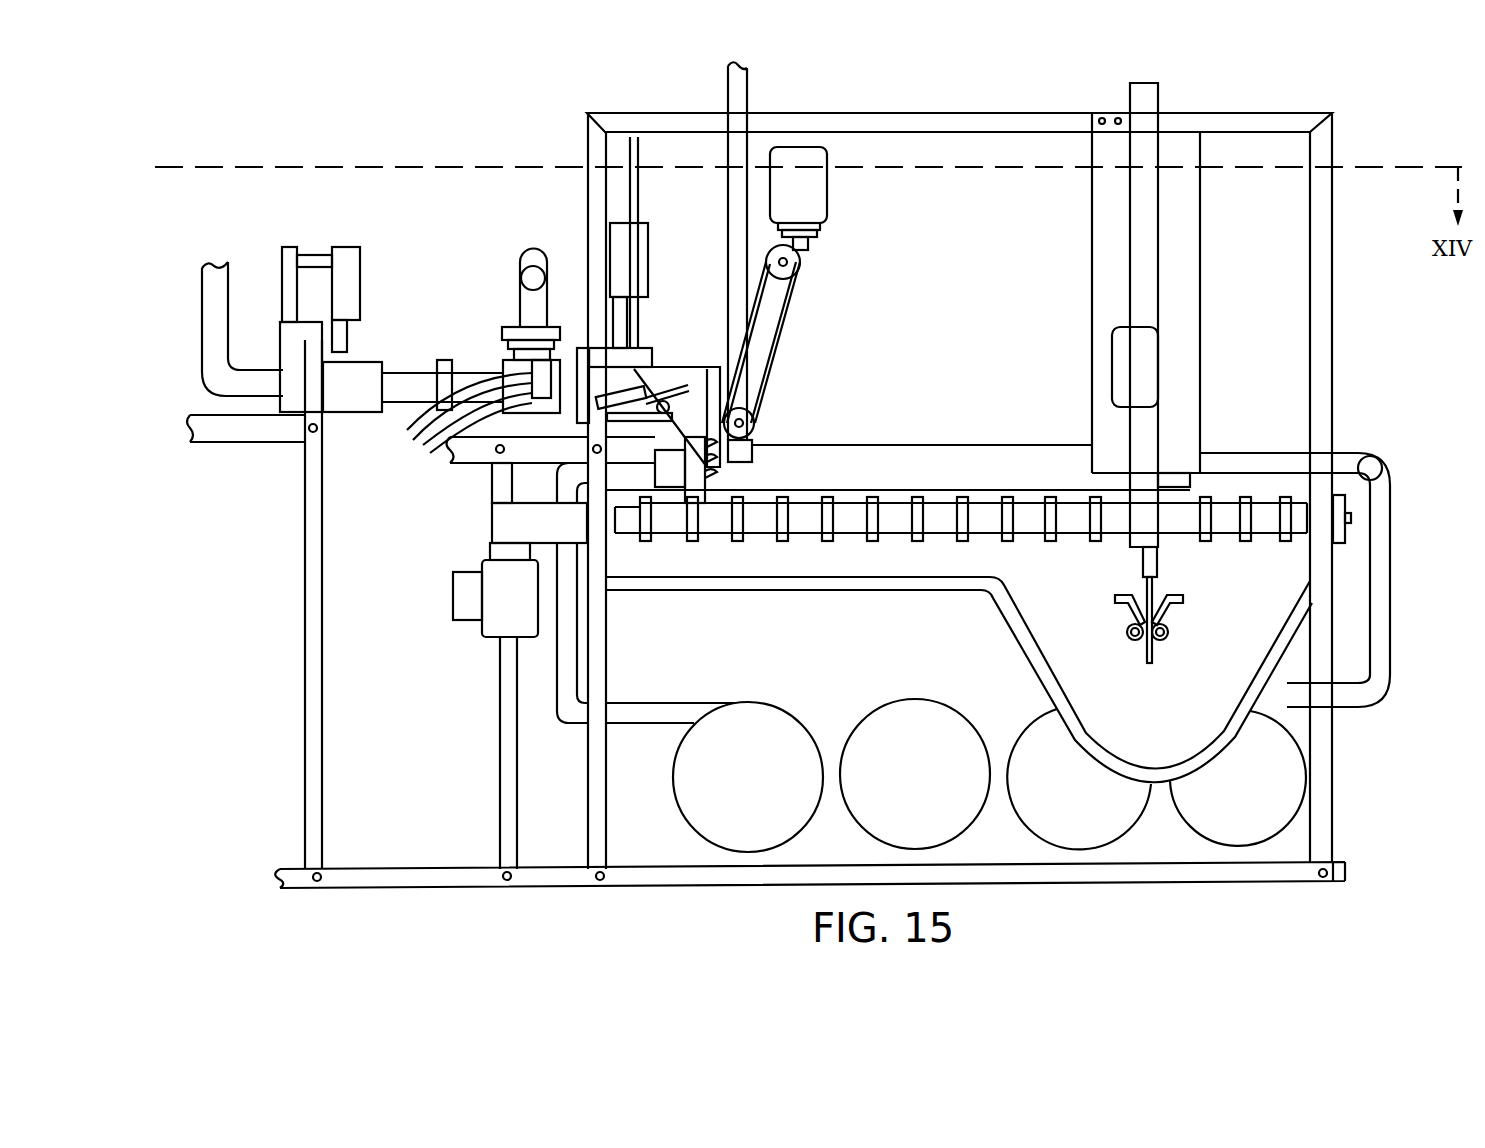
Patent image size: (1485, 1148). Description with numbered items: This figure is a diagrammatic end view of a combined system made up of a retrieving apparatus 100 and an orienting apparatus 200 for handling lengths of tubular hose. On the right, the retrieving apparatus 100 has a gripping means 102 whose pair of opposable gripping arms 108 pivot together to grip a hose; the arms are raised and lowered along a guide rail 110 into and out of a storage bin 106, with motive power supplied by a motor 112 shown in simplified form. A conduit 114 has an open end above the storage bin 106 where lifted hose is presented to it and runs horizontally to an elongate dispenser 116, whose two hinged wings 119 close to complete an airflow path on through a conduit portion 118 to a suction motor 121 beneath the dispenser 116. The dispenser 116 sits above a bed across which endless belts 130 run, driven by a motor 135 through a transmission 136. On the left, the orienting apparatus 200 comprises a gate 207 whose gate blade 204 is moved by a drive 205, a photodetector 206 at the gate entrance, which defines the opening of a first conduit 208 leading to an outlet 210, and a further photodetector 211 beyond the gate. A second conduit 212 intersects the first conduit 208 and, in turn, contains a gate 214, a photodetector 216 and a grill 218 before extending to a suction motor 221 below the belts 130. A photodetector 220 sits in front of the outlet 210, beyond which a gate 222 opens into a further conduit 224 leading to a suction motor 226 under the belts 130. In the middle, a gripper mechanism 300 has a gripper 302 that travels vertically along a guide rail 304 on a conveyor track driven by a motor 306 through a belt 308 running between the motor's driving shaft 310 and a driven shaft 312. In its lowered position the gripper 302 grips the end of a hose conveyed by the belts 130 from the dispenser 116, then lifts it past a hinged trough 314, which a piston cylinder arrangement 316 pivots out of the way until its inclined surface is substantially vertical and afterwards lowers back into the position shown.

The retrieving apparatus 100 is at (1360, 324).
The gripping means 102 is at (1173, 617).
The storage bin 106 is at (1243, 750).
The gripping arms 108 is at (1185, 598).
The guide rail 110 is at (1152, 100).
The motor 112 is at (1152, 360).
The conduit 114 is at (1357, 450).
The dispenser 116 is at (930, 443).
The conduit portion 118 is at (572, 728).
The wings 119 is at (913, 483).
The suction motor 121 is at (745, 702).
The endless belts 130 is at (1093, 537).
The motor 135 is at (482, 565).
The transmission 136 is at (490, 533).
The orienting apparatus 200 is at (420, 296).
The gate blade 204 is at (620, 313).
The drive 205 is at (650, 237).
The photodetector 206 is at (650, 362).
The gate 207 is at (655, 247).
The first conduit 208 is at (391, 353).
The outlet 210 is at (325, 393).
The photodetector 211 is at (648, 426).
The second conduit 212 is at (519, 270).
The gate 214 is at (503, 352).
The photodetector 216 is at (503, 334).
The grill 218 is at (512, 338).
The photodetector 220 is at (423, 410).
The suction motor 221 is at (912, 698).
The gate 222 is at (287, 401).
The conduit 224 is at (228, 262).
The suction motor 226 is at (1035, 710).
The gripper mechanism 300 is at (858, 190).
The gripper 302 is at (700, 486).
The guide rail 304 is at (728, 187).
The motor 306 is at (800, 160).
The belt 308 is at (778, 350).
The driving shaft 310 is at (798, 267).
The driven shaft 312 is at (755, 428).
The hinged trough 314 is at (673, 367).
The piston cylinder arrangement 316 is at (600, 403).